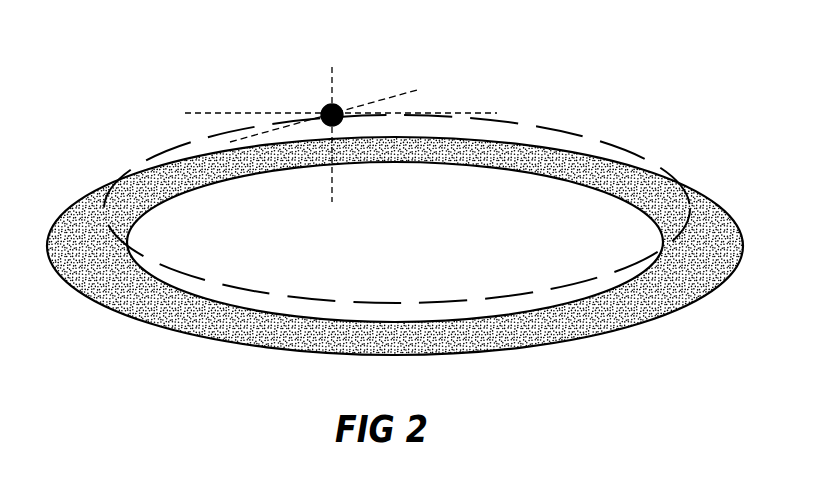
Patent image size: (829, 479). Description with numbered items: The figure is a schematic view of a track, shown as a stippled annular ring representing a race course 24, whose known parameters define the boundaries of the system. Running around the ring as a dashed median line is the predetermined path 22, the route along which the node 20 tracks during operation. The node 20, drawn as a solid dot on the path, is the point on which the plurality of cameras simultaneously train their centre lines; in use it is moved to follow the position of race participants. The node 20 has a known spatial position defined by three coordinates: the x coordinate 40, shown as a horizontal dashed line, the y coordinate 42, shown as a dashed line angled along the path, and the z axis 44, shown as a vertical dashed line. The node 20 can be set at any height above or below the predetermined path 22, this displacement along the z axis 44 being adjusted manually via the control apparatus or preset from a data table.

The node 20 is at (322, 104).
The predetermined path 22 is at (608, 145).
The race course 24 is at (118, 290).
The x coordinate 40 is at (203, 112).
The y coordinate 42 is at (392, 100).
The z axis 44 is at (332, 182).